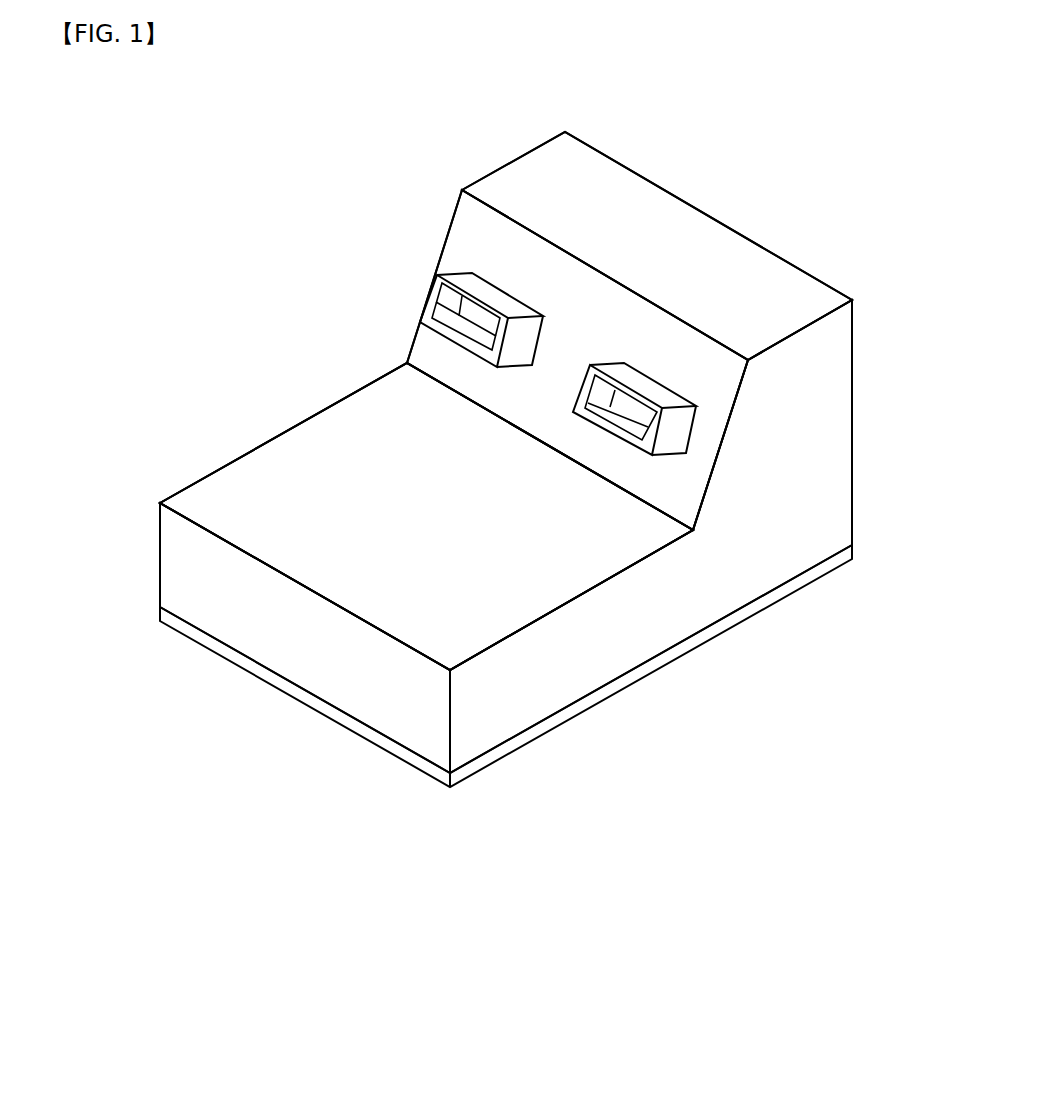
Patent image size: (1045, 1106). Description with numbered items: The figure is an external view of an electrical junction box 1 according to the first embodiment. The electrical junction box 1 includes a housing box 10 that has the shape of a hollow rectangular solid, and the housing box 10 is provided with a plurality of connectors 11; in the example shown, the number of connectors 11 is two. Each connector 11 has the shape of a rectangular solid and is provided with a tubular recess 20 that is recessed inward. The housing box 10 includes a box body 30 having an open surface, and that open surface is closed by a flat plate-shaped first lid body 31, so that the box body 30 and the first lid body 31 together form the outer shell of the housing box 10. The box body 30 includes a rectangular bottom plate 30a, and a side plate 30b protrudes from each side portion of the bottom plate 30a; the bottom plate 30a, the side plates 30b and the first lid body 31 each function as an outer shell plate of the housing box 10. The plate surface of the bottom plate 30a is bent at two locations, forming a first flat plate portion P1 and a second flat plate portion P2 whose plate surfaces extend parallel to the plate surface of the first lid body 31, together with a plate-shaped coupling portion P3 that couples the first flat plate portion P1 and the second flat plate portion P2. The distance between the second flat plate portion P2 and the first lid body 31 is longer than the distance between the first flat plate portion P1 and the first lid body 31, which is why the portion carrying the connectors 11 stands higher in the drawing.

The electrical junction box 1 is at (218, 140).
The housing box 10 is at (427, 799).
The connector 11 is at (418, 292).
The tubular recess 20 is at (465, 328).
The box body 30 is at (282, 393).
The bottom plate 30a is at (238, 447).
The side plate 30b is at (330, 672).
The first lid body 31 is at (568, 710).
The first flat plate portion P1 is at (223, 490).
The second flat plate portion P2 is at (668, 227).
The coupling portion P3 is at (467, 237).